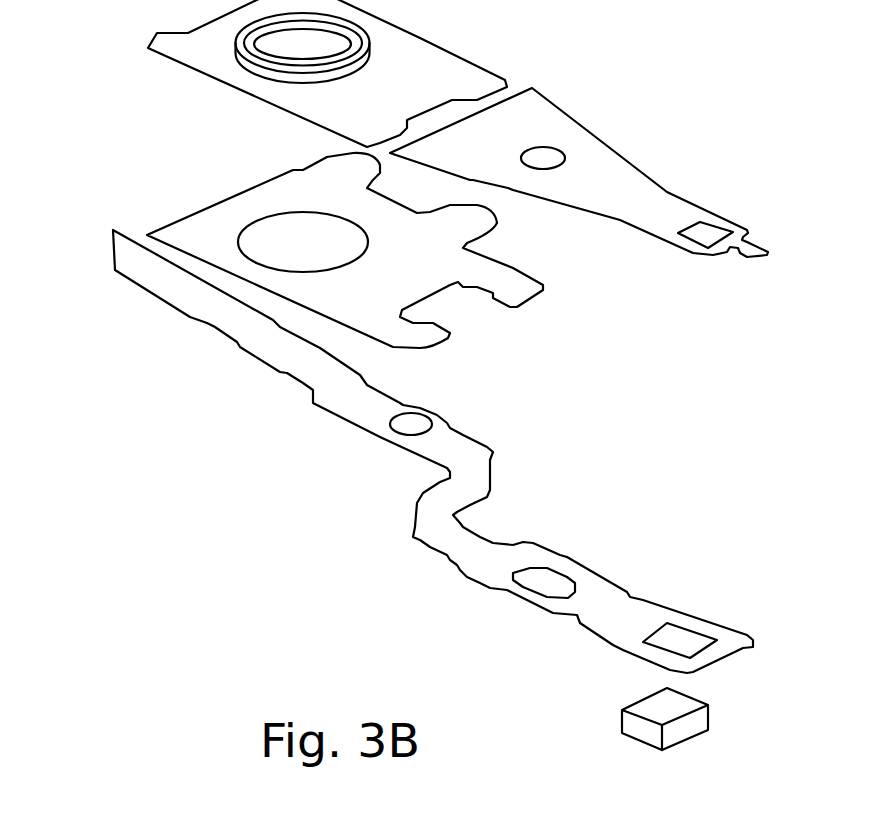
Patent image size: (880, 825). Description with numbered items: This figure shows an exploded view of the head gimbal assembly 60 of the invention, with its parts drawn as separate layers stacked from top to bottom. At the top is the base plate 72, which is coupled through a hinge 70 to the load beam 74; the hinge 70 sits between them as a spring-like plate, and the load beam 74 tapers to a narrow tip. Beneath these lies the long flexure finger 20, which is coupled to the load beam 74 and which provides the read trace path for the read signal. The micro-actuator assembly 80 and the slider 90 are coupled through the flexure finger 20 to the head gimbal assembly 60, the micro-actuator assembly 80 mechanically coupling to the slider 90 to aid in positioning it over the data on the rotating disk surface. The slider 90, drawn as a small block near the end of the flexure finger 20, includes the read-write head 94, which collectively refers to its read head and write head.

The head gimbal assembly 60 is at (97, 0).
The base plate 72 is at (497, 70).
The load beam 74 is at (670, 193).
The hinge 70 is at (513, 268).
The flexure finger 20 is at (347, 427).
The micro-actuator assembly 80 is at (657, 633).
The slider 90 is at (605, 692).
The read-write head 94 is at (692, 738).